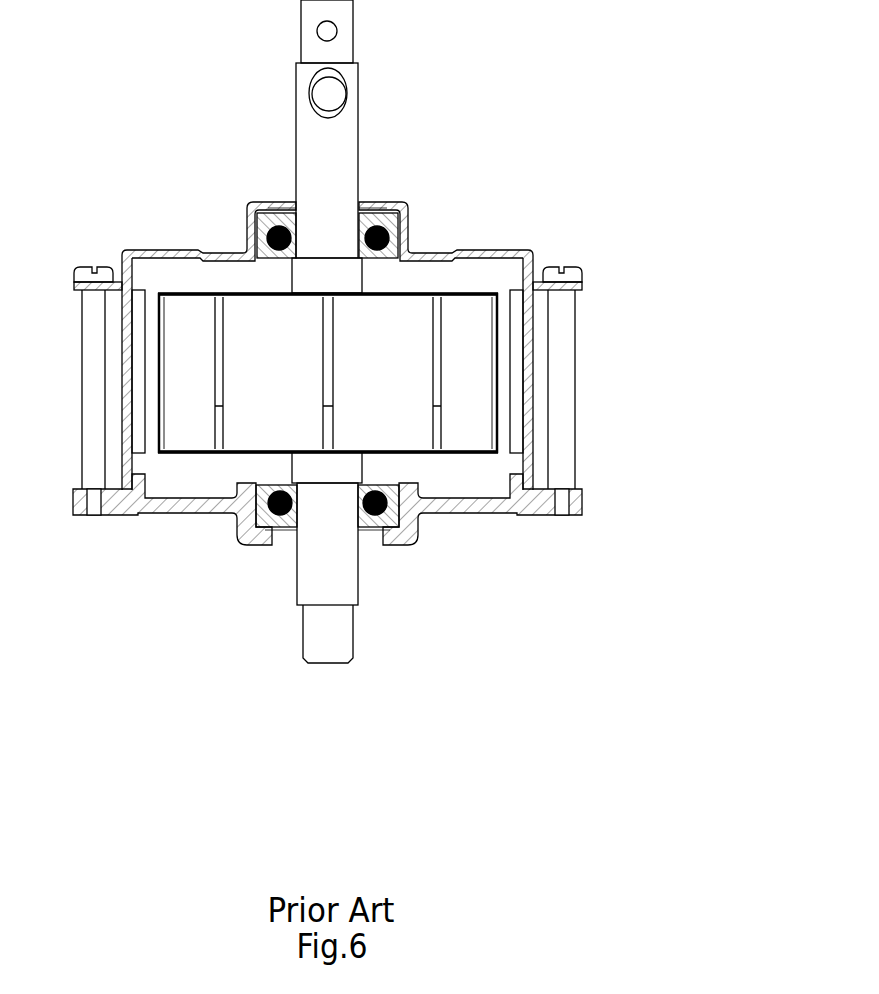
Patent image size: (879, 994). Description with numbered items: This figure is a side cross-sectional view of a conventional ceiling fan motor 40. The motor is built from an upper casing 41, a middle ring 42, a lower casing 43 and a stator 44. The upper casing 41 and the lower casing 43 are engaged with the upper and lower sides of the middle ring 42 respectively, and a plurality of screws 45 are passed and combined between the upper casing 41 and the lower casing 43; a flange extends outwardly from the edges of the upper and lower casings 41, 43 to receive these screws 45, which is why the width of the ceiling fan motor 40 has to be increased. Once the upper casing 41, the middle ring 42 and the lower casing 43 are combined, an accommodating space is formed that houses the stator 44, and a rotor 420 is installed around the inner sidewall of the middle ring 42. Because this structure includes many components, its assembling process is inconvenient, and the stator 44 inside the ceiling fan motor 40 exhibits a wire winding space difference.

The conventional ceiling fan motor 40 is at (507, 192).
The upper casing 41 is at (433, 255).
The middle ring 42 is at (530, 377).
The rotor 420 is at (513, 358).
The lower casing 43 is at (540, 512).
The stator 44 is at (482, 435).
The screws 45 is at (563, 322).